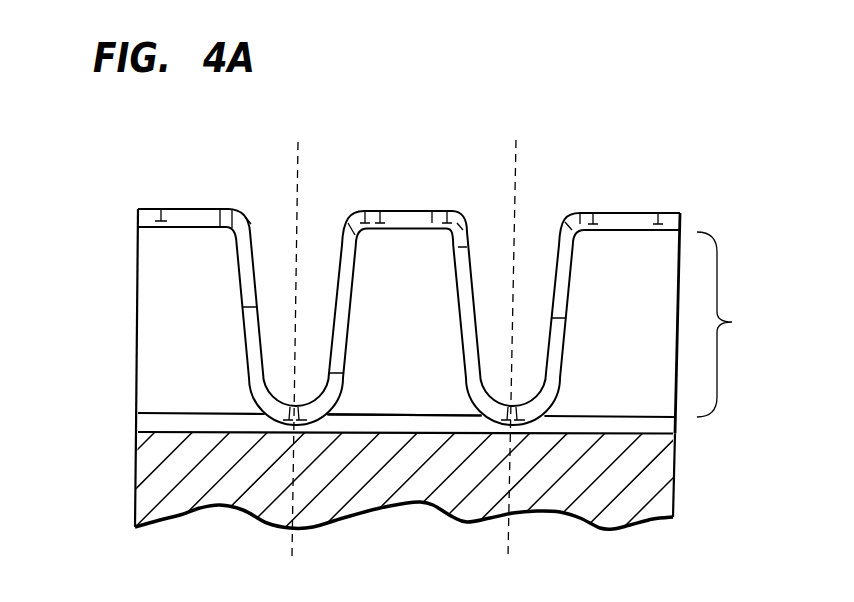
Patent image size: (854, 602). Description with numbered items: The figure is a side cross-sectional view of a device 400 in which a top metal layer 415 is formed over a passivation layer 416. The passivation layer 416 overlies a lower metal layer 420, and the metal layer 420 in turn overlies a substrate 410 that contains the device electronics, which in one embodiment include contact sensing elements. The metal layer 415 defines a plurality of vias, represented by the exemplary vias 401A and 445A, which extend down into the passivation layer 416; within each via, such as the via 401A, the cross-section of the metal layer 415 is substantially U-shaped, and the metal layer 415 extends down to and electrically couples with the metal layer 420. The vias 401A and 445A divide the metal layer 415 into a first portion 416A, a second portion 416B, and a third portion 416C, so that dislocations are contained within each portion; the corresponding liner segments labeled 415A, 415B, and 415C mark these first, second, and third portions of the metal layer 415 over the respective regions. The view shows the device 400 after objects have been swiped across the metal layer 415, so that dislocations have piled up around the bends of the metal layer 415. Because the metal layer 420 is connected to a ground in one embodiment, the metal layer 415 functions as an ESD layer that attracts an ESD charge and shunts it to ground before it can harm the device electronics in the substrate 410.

The device 400 is at (660, 93).
The via 401A is at (311, 309).
The via 445A is at (529, 309).
The substrate 410 is at (676, 478).
The metal layer 415 is at (407, 283).
The first portion 415A is at (138, 218).
The second portion 415B is at (410, 214).
The third portion 415C is at (633, 213).
The passivation layer 416 is at (463, 321).
The first portion 416A is at (212, 369).
The second portion 416B is at (434, 369).
The third portion 416C is at (650, 369).
The metal layer 420 is at (676, 428).